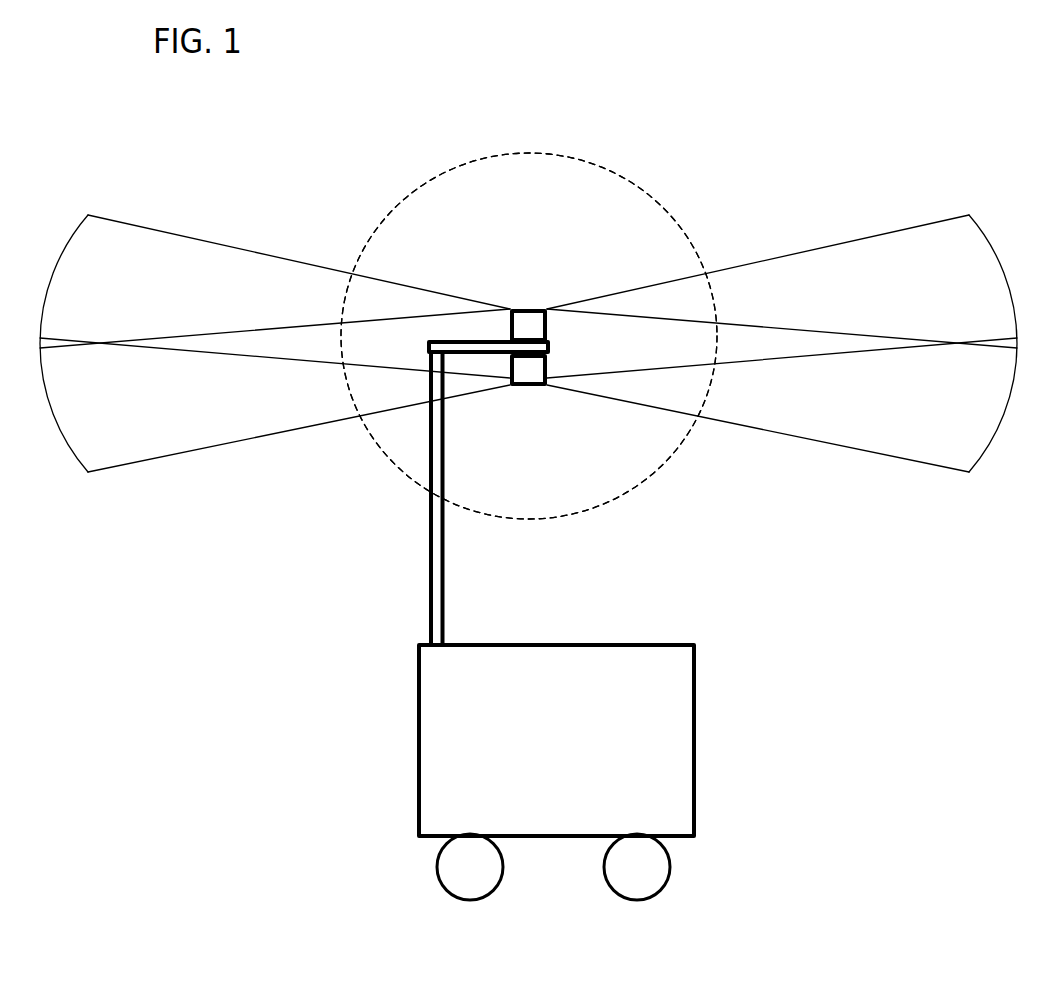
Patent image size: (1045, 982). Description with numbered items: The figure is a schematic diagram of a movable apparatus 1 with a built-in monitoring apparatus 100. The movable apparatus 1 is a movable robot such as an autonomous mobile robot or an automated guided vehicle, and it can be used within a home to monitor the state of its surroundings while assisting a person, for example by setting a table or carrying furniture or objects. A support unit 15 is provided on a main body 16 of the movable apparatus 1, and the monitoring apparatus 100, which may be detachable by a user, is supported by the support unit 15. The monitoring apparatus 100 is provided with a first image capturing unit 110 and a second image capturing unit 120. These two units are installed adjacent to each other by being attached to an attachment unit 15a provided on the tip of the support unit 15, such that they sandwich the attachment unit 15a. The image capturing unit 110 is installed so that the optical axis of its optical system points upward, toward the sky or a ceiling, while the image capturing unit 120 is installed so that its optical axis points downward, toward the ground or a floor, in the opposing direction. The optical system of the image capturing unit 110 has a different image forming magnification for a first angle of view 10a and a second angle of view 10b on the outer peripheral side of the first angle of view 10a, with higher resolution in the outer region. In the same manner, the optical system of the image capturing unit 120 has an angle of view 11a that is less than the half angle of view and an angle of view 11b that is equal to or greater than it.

The movable apparatus 1 is at (588, 738).
The main body 16 is at (673, 643).
The support unit 15 is at (445, 443).
The attachment unit 15a is at (487, 356).
The monitoring apparatus 100 is at (576, 290).
The image capturing unit 110 is at (539, 306).
The image capturing unit 120 is at (530, 368).
The first angle of view 10a is at (599, 162).
The second angle of view 10b is at (207, 238).
The angle of view 11a is at (662, 470).
The angle of view 11b is at (200, 452).